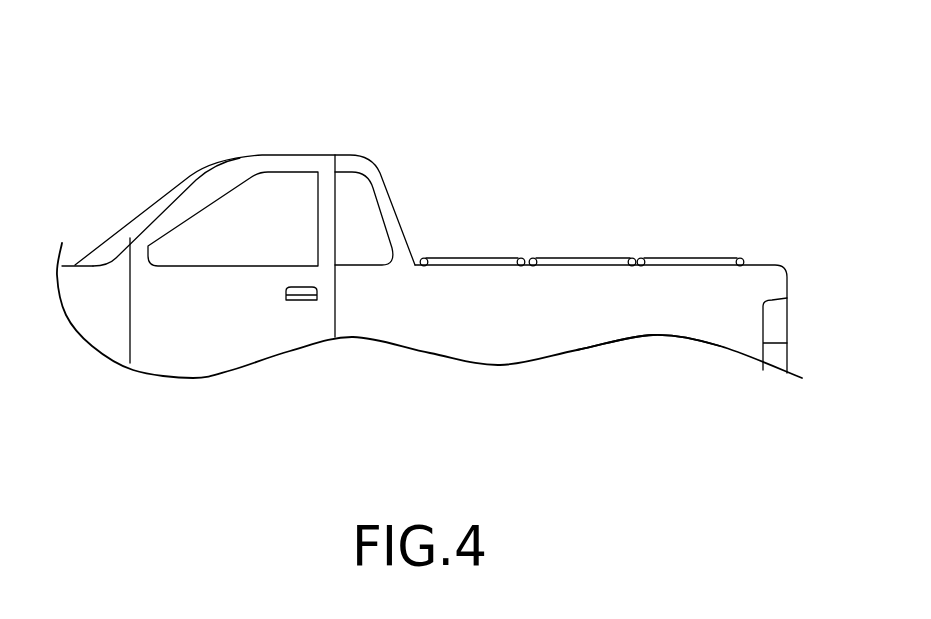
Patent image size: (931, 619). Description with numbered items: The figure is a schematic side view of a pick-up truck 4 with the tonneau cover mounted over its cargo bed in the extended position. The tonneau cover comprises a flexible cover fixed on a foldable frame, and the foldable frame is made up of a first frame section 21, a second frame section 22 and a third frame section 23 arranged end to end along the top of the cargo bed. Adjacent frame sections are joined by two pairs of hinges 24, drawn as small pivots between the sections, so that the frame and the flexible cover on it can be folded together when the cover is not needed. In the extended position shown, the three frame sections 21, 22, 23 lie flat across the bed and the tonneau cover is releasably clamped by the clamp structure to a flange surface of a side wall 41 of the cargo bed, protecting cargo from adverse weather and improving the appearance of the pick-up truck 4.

The pick-up truck 4 is at (198, 129).
The first frame section 21 is at (470, 258).
The second frame section 22 is at (587, 258).
The third frame section 23 is at (697, 262).
The hinges 24 is at (533, 258).
The side wall 41 is at (575, 337).